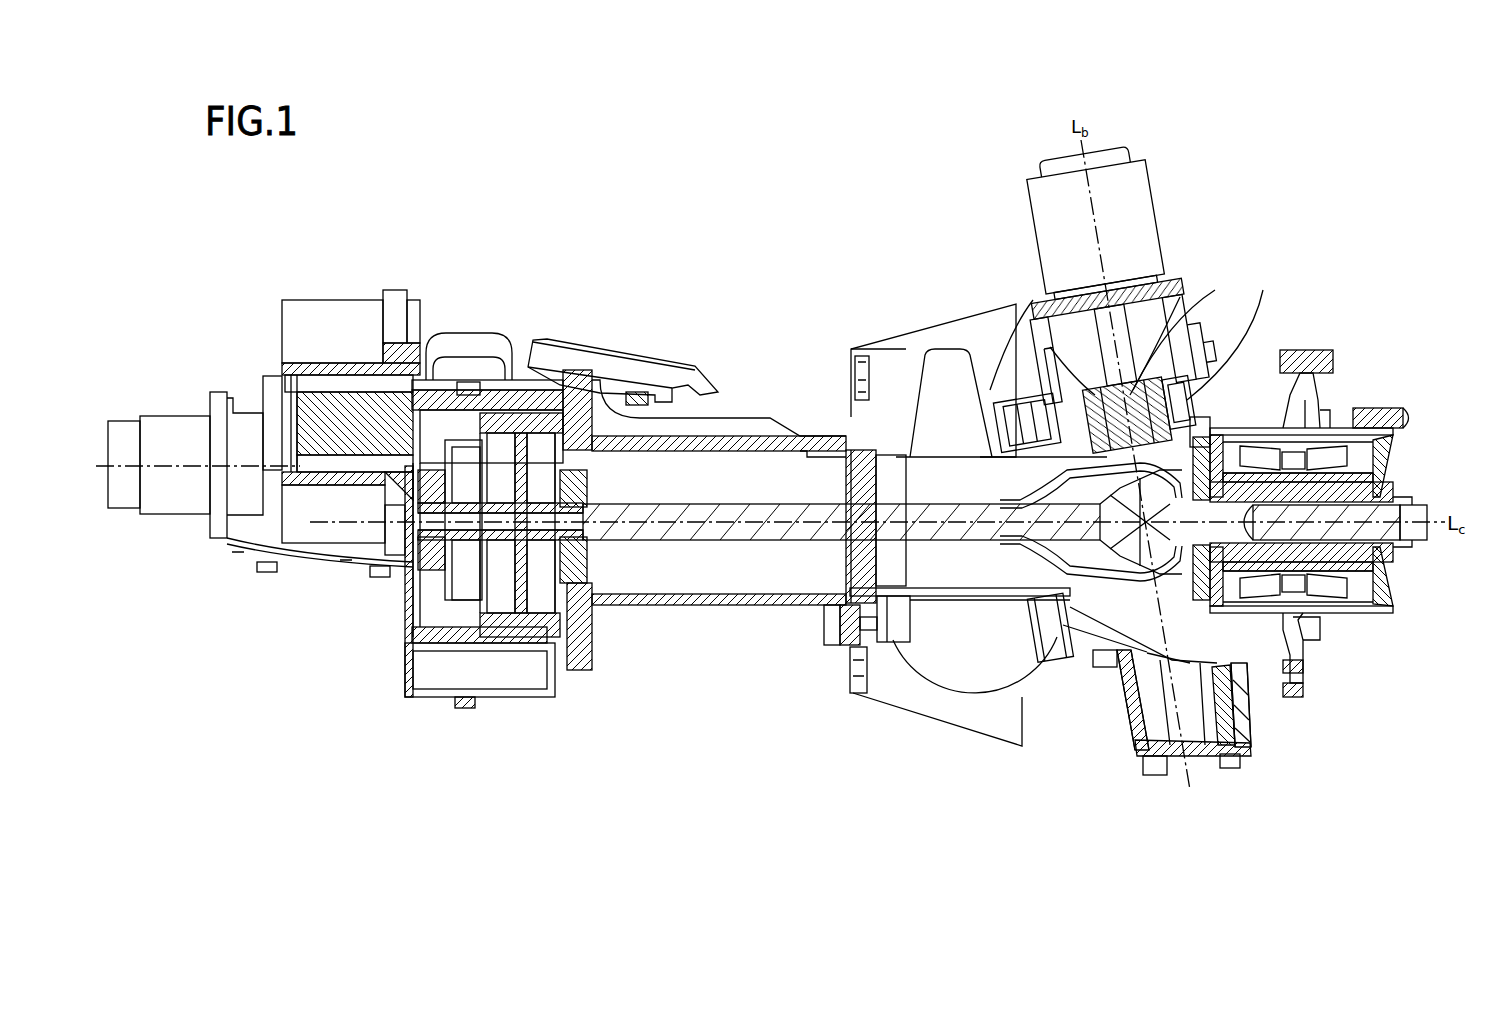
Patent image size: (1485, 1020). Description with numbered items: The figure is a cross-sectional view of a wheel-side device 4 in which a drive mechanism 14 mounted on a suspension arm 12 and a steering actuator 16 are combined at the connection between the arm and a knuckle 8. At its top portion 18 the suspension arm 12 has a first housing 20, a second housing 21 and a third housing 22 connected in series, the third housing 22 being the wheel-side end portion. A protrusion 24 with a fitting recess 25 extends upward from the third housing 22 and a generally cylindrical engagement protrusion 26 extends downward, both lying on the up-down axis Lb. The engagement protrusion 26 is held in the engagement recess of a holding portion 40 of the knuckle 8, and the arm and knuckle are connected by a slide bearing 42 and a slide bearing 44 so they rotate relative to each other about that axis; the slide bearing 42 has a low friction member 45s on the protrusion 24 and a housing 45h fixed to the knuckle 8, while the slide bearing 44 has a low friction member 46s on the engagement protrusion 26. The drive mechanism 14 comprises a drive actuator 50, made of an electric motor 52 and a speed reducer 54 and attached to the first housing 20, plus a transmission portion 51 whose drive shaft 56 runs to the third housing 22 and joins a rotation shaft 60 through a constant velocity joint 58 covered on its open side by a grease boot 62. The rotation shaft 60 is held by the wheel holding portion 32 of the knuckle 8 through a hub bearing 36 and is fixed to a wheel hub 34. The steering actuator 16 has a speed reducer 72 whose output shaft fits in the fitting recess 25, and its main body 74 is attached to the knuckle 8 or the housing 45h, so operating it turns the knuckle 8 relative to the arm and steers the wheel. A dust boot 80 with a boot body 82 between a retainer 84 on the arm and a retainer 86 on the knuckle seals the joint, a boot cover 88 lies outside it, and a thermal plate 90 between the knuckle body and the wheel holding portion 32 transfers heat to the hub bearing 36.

The wheel-side device 4 is at (520, 300).
The knuckle 8 is at (1245, 663).
The suspension arm 12 is at (491, 436).
The drive mechanism 14 is at (325, 295).
The steering actuator 16 is at (1160, 140).
The top portion 18 is at (720, 630).
The first housing 20 is at (675, 598).
The second housing 21 is at (982, 597).
The third housing 22 is at (1050, 635).
The protrusion 24 is at (1195, 385).
The fitting recess 25 is at (1125, 400).
The engagement protrusion 26 is at (1240, 715).
The wheel holding portion 32 is at (1340, 470).
The wheel hub 34 is at (1303, 660).
The hub bearing 36 is at (1320, 440).
The holding portion 40 is at (1190, 780).
The slide bearing 42 is at (950, 340).
The slide bearing 44 is at (1127, 740).
The housing 45h is at (1015, 395).
The low friction member 45s is at (1190, 430).
The low friction member 46s is at (1120, 700).
The drive actuator 50 is at (410, 290).
The transmission portion 51 is at (766, 545).
The electric motor 52 is at (335, 595).
The speed reducer 54 is at (490, 710).
The drive shaft 56 is at (638, 512).
The constant velocity joint 58 is at (1113, 496).
The rotation shaft 60 is at (1345, 585).
The grease boot 62 is at (1035, 582).
The speed reducer 72 is at (1037, 330).
The main body 74 is at (1172, 300).
The dust boot 80 is at (945, 340).
The boot body 82 is at (955, 378).
The retainer 84 is at (870, 640).
The retainer 86 is at (1040, 565).
The boot cover 88 is at (870, 355).
The thermal plate 90 is at (1340, 612).